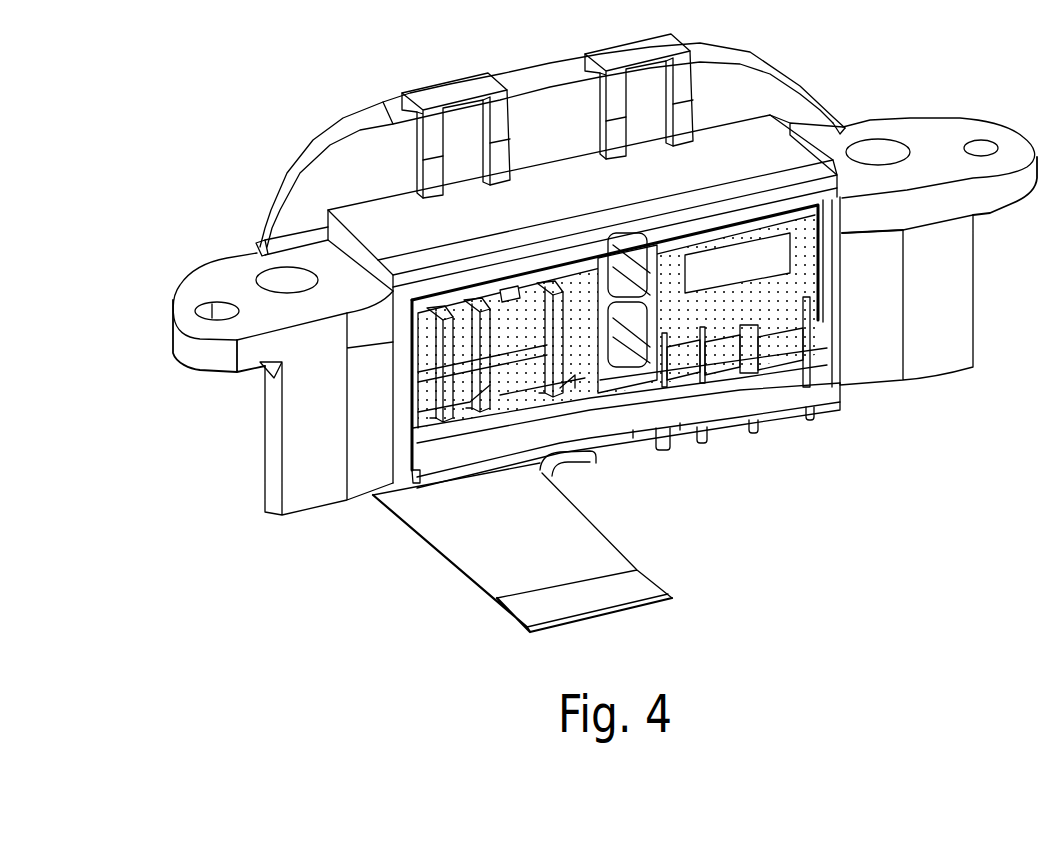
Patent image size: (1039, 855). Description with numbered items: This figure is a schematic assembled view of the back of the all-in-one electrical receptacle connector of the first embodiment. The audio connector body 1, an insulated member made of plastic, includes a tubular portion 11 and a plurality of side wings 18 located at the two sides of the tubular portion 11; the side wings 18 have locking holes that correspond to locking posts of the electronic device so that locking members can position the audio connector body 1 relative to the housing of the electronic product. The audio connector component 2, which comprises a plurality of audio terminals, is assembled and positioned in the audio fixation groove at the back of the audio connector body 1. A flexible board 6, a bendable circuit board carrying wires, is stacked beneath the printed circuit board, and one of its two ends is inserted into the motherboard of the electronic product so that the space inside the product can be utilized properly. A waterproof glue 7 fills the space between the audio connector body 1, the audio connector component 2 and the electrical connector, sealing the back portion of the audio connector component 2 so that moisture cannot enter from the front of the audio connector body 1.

The audio connector body 1 is at (267, 168).
The audio connector component 2 is at (785, 306).
The flexible board 6 is at (473, 553).
The waterproof glue 7 is at (535, 394).
The tubular portion 11 is at (341, 135).
The side wings 18 is at (925, 148).